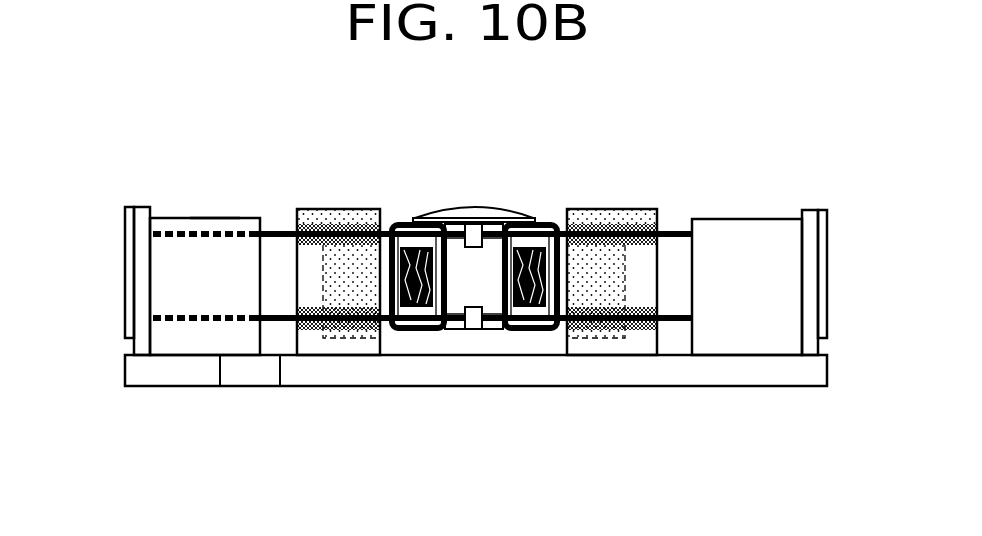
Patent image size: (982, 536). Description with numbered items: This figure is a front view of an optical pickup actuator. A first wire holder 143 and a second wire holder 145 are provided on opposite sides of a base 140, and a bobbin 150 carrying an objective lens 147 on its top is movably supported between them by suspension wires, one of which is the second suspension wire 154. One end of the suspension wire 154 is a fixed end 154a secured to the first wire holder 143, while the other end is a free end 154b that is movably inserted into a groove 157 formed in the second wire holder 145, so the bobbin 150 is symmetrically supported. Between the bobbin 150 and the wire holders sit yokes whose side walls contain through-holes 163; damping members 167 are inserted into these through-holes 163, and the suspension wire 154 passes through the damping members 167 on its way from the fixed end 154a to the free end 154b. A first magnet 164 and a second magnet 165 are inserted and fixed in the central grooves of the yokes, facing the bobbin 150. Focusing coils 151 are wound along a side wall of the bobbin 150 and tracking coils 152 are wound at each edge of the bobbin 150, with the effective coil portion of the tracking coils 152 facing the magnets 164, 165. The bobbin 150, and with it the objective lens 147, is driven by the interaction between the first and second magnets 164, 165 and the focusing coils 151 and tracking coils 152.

The base 140 is at (515, 386).
The first wire holder 143 is at (765, 219).
The second wire holder 145 is at (212, 218).
The objective lens 147 is at (472, 208).
The bobbin 150 is at (475, 293).
The focusing coils 151 is at (405, 330).
The tracking coils 152 is at (436, 330).
The second suspension wire 154 is at (384, 300).
The fixed end 154a is at (702, 232).
The free end 154b is at (153, 234).
The grooves 157 is at (174, 218).
The through-holes 163 is at (322, 250).
The first magnet 164 is at (604, 297).
The second magnet 165 is at (343, 297).
The damping members 167 is at (363, 226).